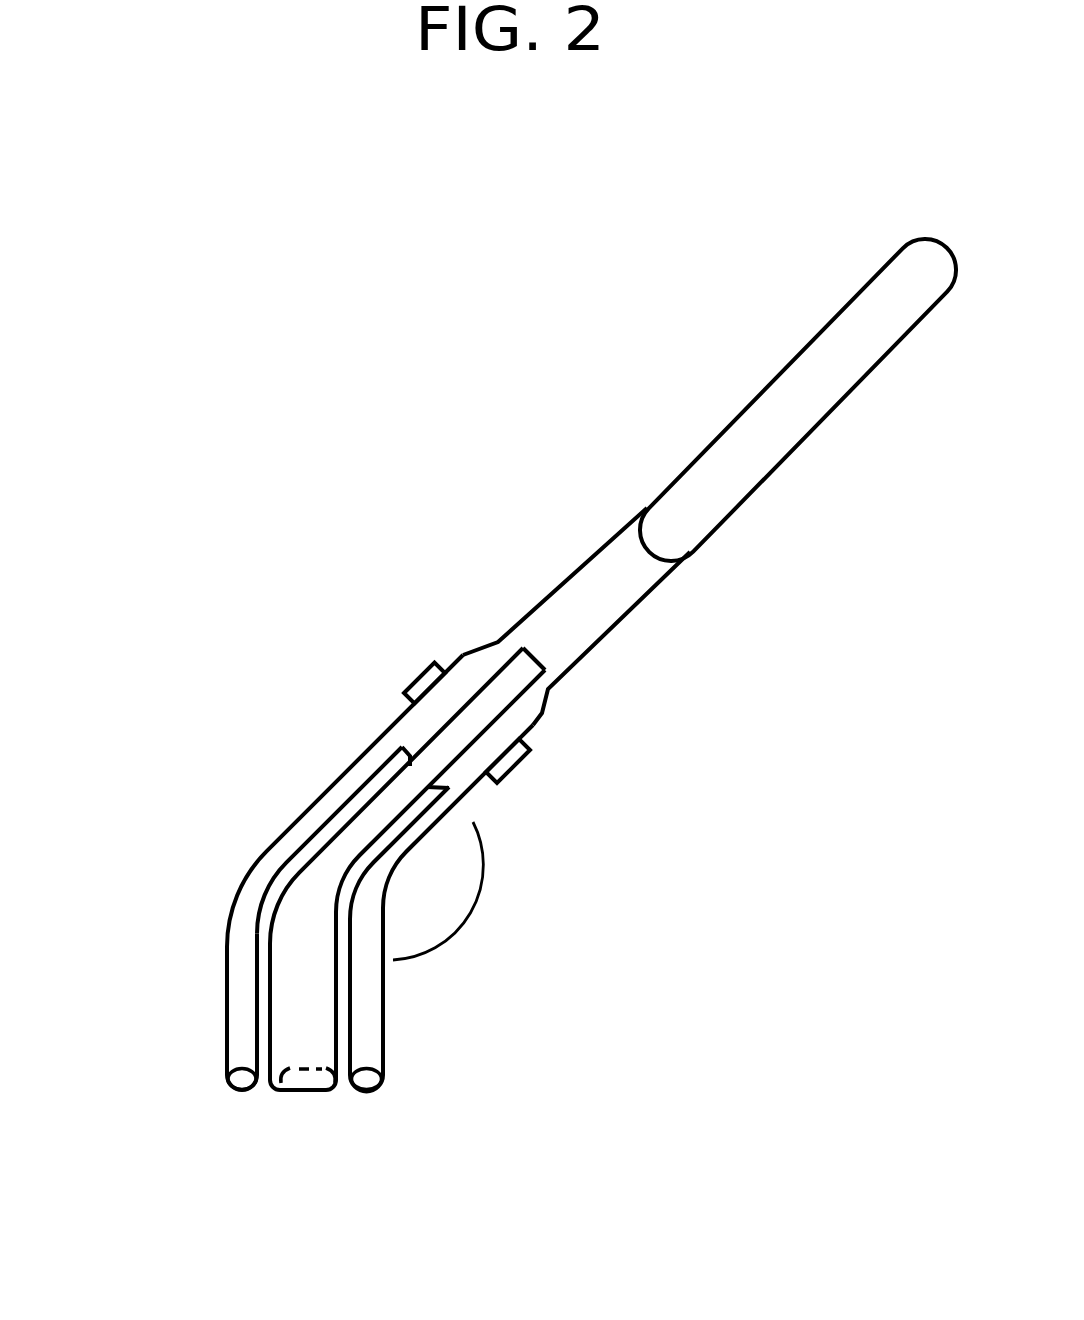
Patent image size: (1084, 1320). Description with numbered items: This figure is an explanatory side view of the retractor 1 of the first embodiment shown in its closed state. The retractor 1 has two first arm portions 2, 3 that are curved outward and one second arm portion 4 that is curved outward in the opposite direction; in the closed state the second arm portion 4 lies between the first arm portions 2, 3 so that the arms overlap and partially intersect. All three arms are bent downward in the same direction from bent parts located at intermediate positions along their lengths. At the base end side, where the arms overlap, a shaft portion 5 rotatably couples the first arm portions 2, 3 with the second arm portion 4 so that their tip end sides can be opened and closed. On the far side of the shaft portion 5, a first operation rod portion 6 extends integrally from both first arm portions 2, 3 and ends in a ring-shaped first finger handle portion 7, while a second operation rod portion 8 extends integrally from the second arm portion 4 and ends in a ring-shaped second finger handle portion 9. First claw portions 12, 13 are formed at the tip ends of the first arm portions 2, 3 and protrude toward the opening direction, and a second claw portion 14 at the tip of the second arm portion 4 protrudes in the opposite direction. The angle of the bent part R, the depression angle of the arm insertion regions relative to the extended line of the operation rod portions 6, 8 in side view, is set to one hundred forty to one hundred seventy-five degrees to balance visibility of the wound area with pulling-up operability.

The retractor 1 is at (384, 417).
The first arm portion 2 is at (236, 970).
The first arm portion 3 is at (363, 1015).
The second arm portion 4 is at (287, 1023).
The shaft portion 5 is at (413, 680).
The first operation rod portion 6 is at (595, 605).
The first finger handle portion 7 is at (780, 370).
The second operation rod portion 8 is at (650, 592).
The second finger handle portion 9 is at (686, 466).
The first claw portion 12 is at (236, 1091).
The first claw portion 13 is at (373, 1093).
The second claw portion 14 is at (307, 1093).
The bent part R is at (293, 872).